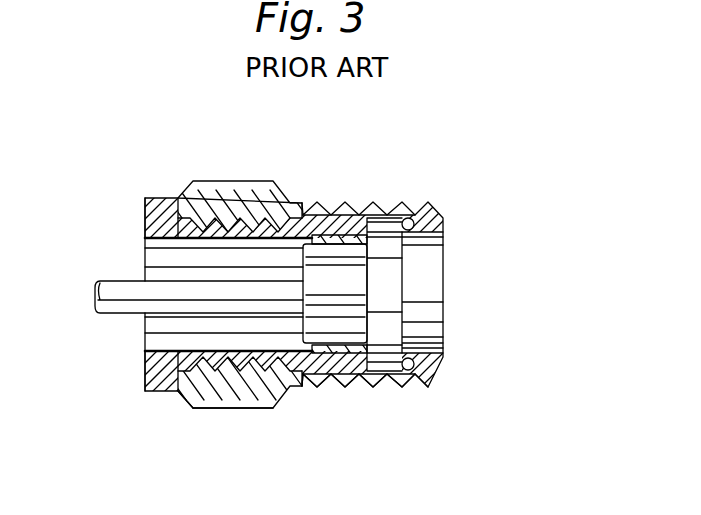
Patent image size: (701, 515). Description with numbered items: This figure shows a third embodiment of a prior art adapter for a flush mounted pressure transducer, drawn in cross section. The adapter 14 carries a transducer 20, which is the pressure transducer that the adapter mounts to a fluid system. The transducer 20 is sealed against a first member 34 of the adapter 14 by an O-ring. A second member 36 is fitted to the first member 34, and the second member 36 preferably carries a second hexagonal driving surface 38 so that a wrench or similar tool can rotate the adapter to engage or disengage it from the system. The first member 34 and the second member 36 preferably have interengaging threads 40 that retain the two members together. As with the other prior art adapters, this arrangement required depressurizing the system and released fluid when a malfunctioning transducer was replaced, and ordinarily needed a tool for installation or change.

The adapter 14 is at (388, 155).
The transducer 20 is at (445, 292).
The first member 34 is at (235, 181).
The second member 36 is at (170, 198).
The second hexagonal driving surface 38 is at (158, 392).
The interengaging threads 40 is at (192, 408).